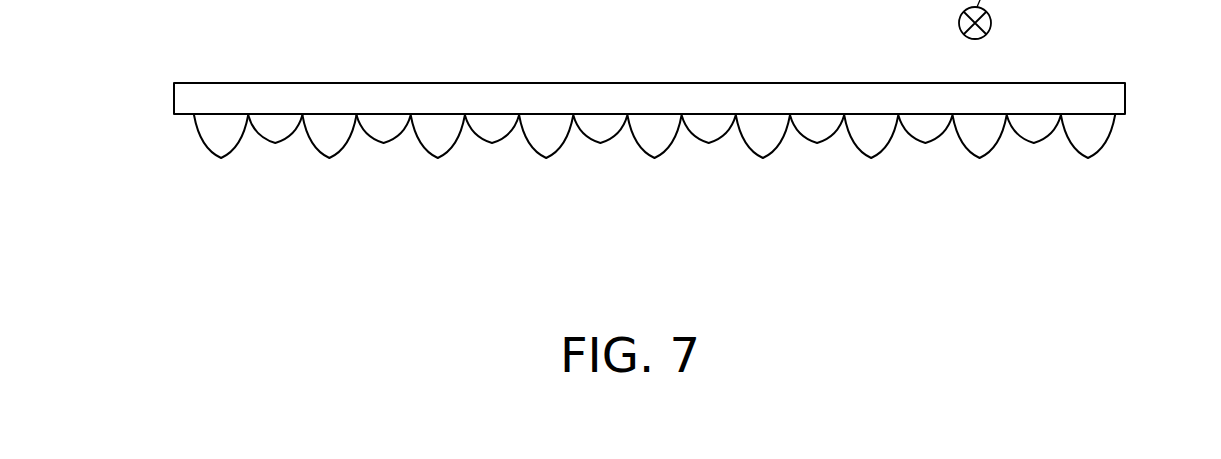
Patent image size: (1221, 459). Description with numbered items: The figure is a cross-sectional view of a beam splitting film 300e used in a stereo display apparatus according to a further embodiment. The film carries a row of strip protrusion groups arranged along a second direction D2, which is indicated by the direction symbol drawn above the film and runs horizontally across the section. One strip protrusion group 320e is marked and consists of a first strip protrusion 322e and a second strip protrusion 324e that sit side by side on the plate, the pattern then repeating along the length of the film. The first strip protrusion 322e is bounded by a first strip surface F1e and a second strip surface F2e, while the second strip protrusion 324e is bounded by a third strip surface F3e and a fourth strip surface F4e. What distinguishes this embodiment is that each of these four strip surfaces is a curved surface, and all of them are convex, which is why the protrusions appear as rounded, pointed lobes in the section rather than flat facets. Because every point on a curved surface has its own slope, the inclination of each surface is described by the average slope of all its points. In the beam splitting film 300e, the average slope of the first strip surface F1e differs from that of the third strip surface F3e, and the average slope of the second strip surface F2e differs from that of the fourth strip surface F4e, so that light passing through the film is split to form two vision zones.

The beam splitting film 300e is at (686, 181).
The strip protrusion group 320e is at (654, 197).
The first strip protrusion 322e is at (269, 134).
The second strip protrusion 324e is at (344, 170).
The first strip surface F1e is at (473, 133).
The second strip surface F2e is at (509, 131).
The third strip surface F3e is at (533, 159).
The fourth strip surface F4e is at (571, 139).
The second direction D2 is at (992, 23).